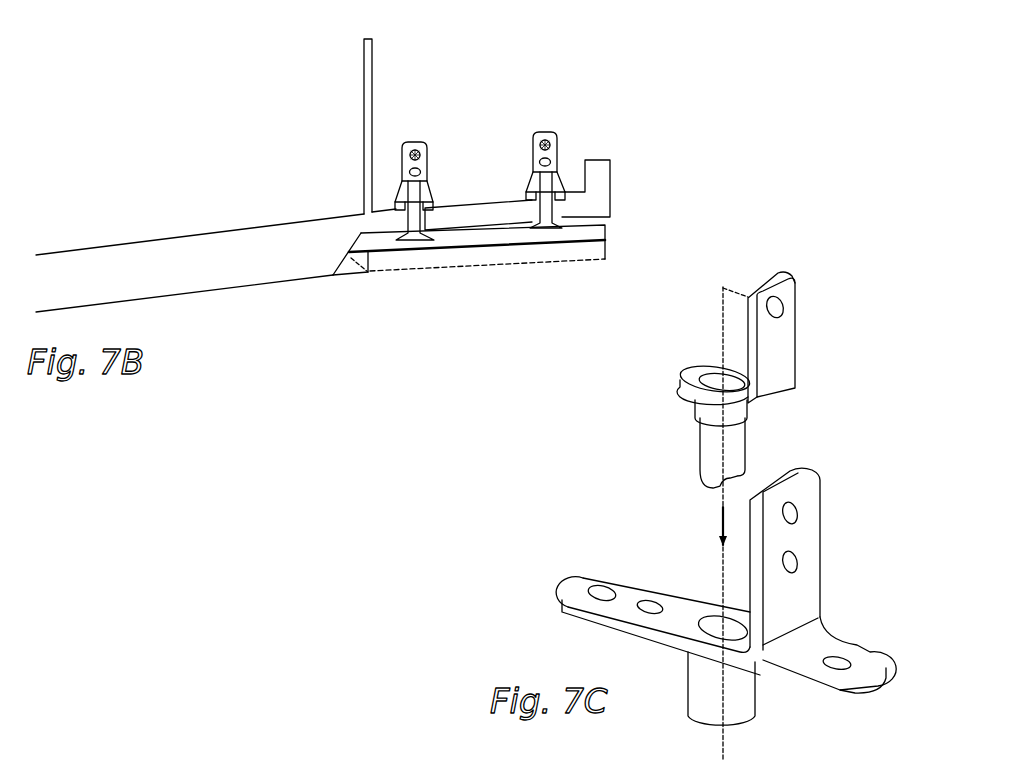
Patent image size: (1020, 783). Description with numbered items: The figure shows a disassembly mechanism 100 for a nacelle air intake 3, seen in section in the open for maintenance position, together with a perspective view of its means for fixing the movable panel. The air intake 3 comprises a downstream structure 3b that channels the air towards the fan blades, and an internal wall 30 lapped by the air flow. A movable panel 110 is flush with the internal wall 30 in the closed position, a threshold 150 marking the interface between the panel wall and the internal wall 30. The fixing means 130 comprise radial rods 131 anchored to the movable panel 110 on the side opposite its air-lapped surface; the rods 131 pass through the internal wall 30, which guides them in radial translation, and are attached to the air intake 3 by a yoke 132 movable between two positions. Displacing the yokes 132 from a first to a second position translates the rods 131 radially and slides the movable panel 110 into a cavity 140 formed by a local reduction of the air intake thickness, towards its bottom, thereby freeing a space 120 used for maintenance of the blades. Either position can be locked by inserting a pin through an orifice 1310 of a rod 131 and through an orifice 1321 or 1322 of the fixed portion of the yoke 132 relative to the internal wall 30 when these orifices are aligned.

In FIG. 7B, the air intake 3 is at (176, 208).
In FIG. 7B, the downstream structure 3b is at (117, 258).
In FIG. 7B, the internal wall 30 is at (181, 294).
In FIG. 7B, the disassembly mechanism 100 is at (559, 82).
In FIG. 7B, the movable panel 110 is at (588, 234).
In FIG. 7B, the space 120 is at (480, 258).
In FIG. 7C, the fixing means 130 is at (626, 470).
In FIG. 7C, the radial rod 131 is at (751, 436).
In FIG. 7C, the yoke 132 is at (738, 580).
In FIG. 7B, the cavity 140 is at (368, 272).
In FIG. 7B, the threshold 150 is at (348, 262).
In FIG. 7C, the orifice 1310 is at (833, 323).
In FIG. 7C, the orifice 1321 is at (850, 532).
In FIG. 7C, the orifice 1322 is at (850, 580).